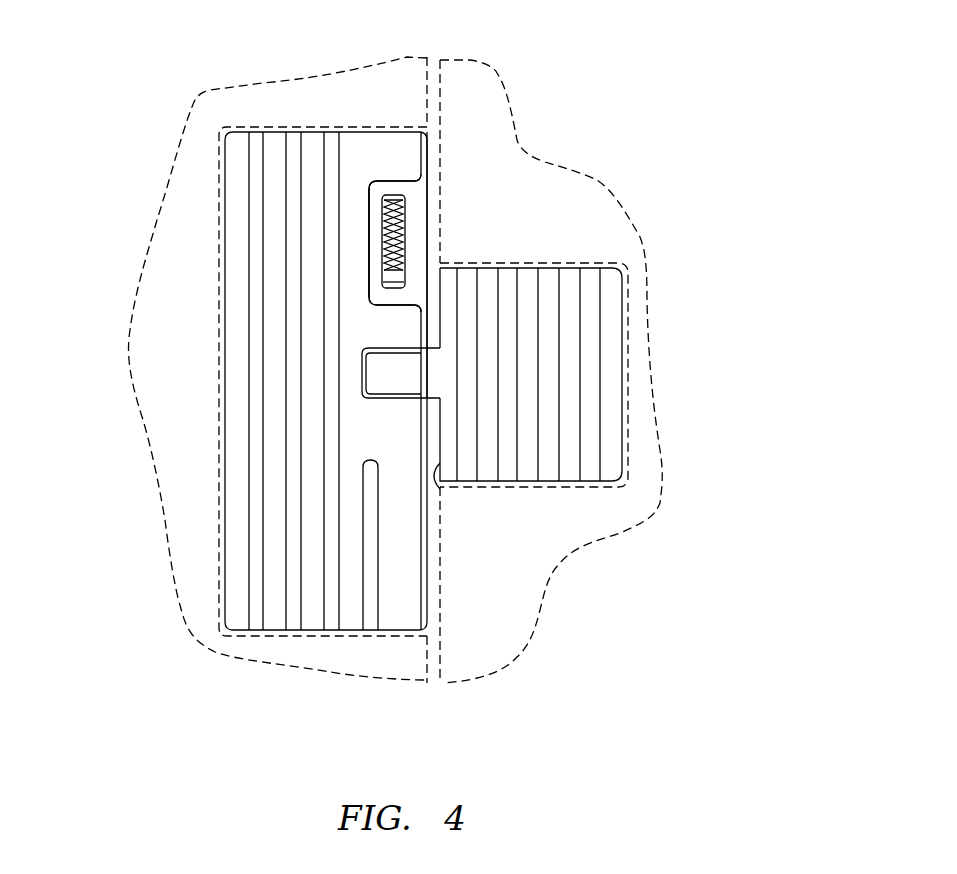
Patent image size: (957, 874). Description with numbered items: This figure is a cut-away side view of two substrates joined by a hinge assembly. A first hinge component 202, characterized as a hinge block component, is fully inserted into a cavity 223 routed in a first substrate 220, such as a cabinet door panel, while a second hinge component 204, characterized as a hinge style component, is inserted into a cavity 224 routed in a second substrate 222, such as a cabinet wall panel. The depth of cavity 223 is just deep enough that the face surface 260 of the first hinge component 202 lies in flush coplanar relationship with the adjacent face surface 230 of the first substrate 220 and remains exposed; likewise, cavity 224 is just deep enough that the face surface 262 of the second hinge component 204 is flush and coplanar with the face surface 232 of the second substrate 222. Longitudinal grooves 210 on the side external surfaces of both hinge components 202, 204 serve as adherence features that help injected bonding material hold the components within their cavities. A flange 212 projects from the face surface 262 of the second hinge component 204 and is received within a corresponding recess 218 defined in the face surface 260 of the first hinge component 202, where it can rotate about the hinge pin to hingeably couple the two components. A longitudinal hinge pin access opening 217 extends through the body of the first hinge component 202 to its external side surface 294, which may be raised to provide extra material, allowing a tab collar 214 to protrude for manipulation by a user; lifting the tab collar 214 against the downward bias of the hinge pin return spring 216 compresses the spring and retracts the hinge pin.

The first hinge component 202 is at (228, 138).
The second hinge component 204 is at (608, 277).
The longitudinal grooves 210 is at (371, 625).
The flange 212 is at (393, 372).
The tab collar 214 is at (375, 279).
The hinge pin return spring 216 is at (407, 204).
The longitudinal hinge pin access opening 217 is at (406, 233).
The recess 218 is at (369, 402).
The first substrate 220 is at (335, 97).
The second substrate 222 is at (470, 67).
The cavity 223 is at (217, 413).
The cavity 224 is at (628, 318).
The face surface 230 is at (427, 58).
The face surface 232 is at (437, 683).
The face surface 260 is at (427, 150).
The face surface 262 is at (440, 490).
The external side surface 294 is at (375, 187).